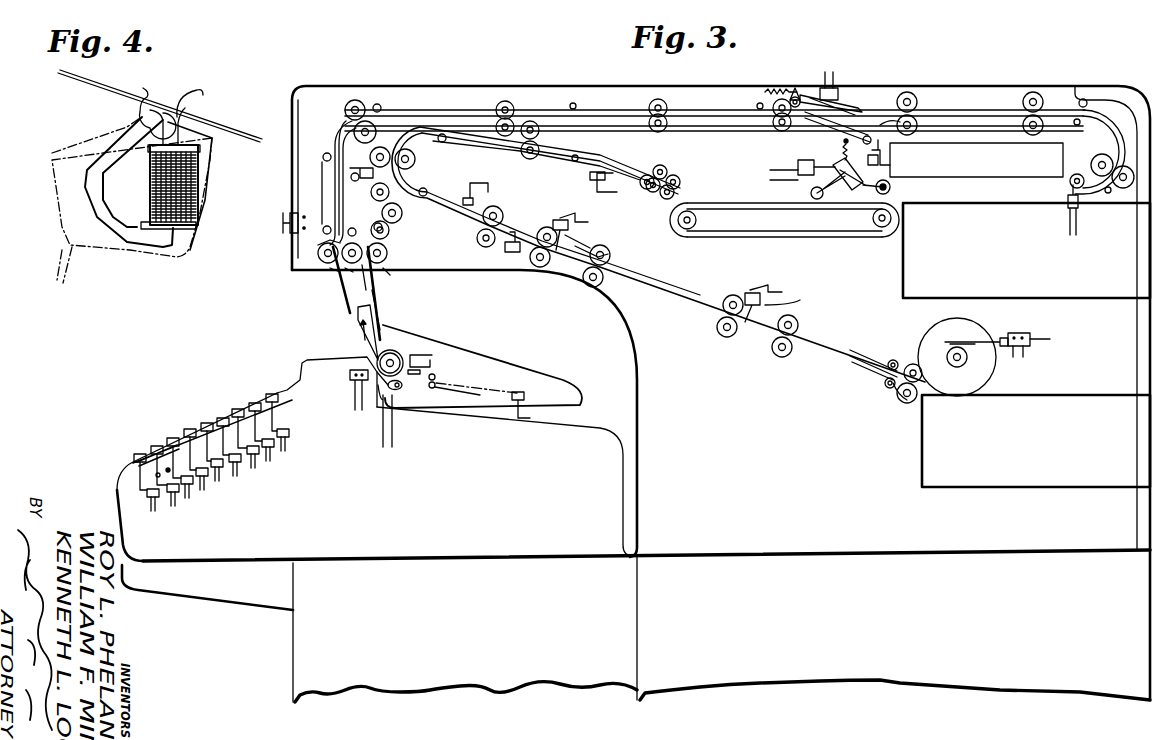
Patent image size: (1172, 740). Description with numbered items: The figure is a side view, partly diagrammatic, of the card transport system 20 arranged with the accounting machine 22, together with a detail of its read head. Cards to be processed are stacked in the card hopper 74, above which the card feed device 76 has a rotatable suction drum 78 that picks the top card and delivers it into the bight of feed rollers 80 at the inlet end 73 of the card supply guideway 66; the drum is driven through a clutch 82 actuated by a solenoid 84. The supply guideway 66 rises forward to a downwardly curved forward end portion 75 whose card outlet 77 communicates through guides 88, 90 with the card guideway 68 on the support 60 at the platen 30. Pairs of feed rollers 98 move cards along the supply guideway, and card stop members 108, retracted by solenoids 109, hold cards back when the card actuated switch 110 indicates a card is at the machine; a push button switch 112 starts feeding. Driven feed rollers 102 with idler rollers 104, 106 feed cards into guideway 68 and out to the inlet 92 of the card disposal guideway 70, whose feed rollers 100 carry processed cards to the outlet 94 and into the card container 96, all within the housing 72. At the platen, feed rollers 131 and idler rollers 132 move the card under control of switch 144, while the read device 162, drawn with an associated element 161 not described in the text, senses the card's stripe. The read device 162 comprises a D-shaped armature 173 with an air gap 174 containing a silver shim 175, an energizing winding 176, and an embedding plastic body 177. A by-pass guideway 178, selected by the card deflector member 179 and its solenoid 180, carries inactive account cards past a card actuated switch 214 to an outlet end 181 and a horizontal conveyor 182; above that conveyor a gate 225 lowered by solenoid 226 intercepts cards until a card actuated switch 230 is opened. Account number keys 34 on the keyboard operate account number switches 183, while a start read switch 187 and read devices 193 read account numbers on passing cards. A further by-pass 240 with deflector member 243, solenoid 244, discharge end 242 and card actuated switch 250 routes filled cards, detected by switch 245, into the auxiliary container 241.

In FIG. 3, the card transport system 20 is at (1084, 79).
In FIG. 3, the business or accounting machine 22 is at (459, 552).
In FIG. 3, the platen 30 is at (398, 353).
In FIG. 3, the account number selection keys 34 is at (223, 412).
In FIG. 3, the support or carriage 60 is at (520, 360).
In FIG. 3, the card supply guideway 66 is at (855, 380).
In FIG. 3, the card guideway 68 is at (440, 380).
In FIG. 3, the card disposal guideway 70 is at (590, 86).
In FIG. 3, the housing 72 is at (972, 86).
In FIG. 3, the inlet end 73 is at (898, 405).
In FIG. 3, the card hopper 74 is at (1037, 442).
In FIG. 3, the downwardly curved forward end portion 75 is at (400, 220).
In FIG. 3, the card feed device 76 is at (1000, 328).
In FIG. 3, the card outlet 77 is at (388, 236).
In FIG. 3, the rotatable drum 78 is at (940, 325).
In FIG. 3, the feed rollers 80 is at (893, 358).
In FIG. 3, the clutch 82 is at (967, 360).
In FIG. 3, the solenoid 84 is at (1042, 342).
In FIG. 3, the guide 88 is at (378, 296).
In FIG. 3, the guide 90 is at (355, 330).
In FIG. 3, the inlet of card disposal guideway 92 is at (320, 248).
In FIG. 3, the outlet 94 is at (1077, 174).
In FIG. 3, the card receptacle or container 96 is at (1045, 272).
In FIG. 3, the card conveyor or feed rollers 98 is at (480, 242).
In FIG. 3, the card conveyor or feed rollers 100 is at (355, 100).
In FIG. 3, the feed rollers 102 is at (333, 280).
In FIG. 3, the idler rollers 104 is at (387, 255).
In FIG. 3, the idler rollers 106 is at (320, 262).
In FIG. 3, the card stop members 108 is at (698, 273).
In FIG. 3, the solenoids 109 is at (580, 232).
In FIG. 3, the card actuated switch 110 is at (345, 378).
In FIG. 3, the push button switch 112 is at (300, 210).
In FIG. 3, the card feed rollers 131 is at (437, 375).
In FIG. 3, the idler rollers 132 is at (470, 394).
In FIG. 3, the card actuated switch 144 is at (526, 394).
In FIG. 3, the solenoid leads 161 is at (368, 410).
In FIG. 3, the electrical transducer or read device 162 is at (400, 388).
In FIG. 4, the electrical transducer or read device 162 is at (178, 262).
In FIG. 4, the D-shaped armature 173 is at (127, 238).
In FIG. 4, the air gap 174 is at (160, 106).
In FIG. 4, the silver shim 175 is at (152, 104).
In FIG. 4, the energizing winding 176 is at (197, 177).
In FIG. 4, the body of plastic material 177 is at (63, 278).
In FIG. 3, the by-pass guideway 178 is at (428, 160).
In FIG. 3, the card deflector member 179 is at (392, 186).
In FIG. 3, the solenoid 180 is at (365, 165).
In FIG. 3, the outlet end 181 is at (680, 190).
In FIG. 3, the horizontal conveyor 182 is at (750, 203).
In FIG. 3, the account number switches 183 is at (175, 485).
In FIG. 3, the start read switch 187 is at (474, 197).
In FIG. 3, the read device 193 is at (516, 230).
In FIG. 3, the card actuated switch 214 is at (590, 174).
In FIG. 3, the control member or gate 225 is at (860, 188).
In FIG. 3, the solenoid 226 is at (798, 165).
In FIG. 3, the card actuated switch 230 is at (1058, 215).
In FIG. 3, the by-pass 240 is at (812, 125).
In FIG. 3, the auxiliary container 241 is at (1018, 169).
In FIG. 3, the discharge end 242 is at (870, 110).
In FIG. 3, the card deflector member 243 is at (800, 88).
In FIG. 3, the solenoid 244 is at (840, 88).
In FIG. 3, the card actuated switch 245 is at (448, 355).
In FIG. 3, the card actuated switch 250 is at (890, 168).